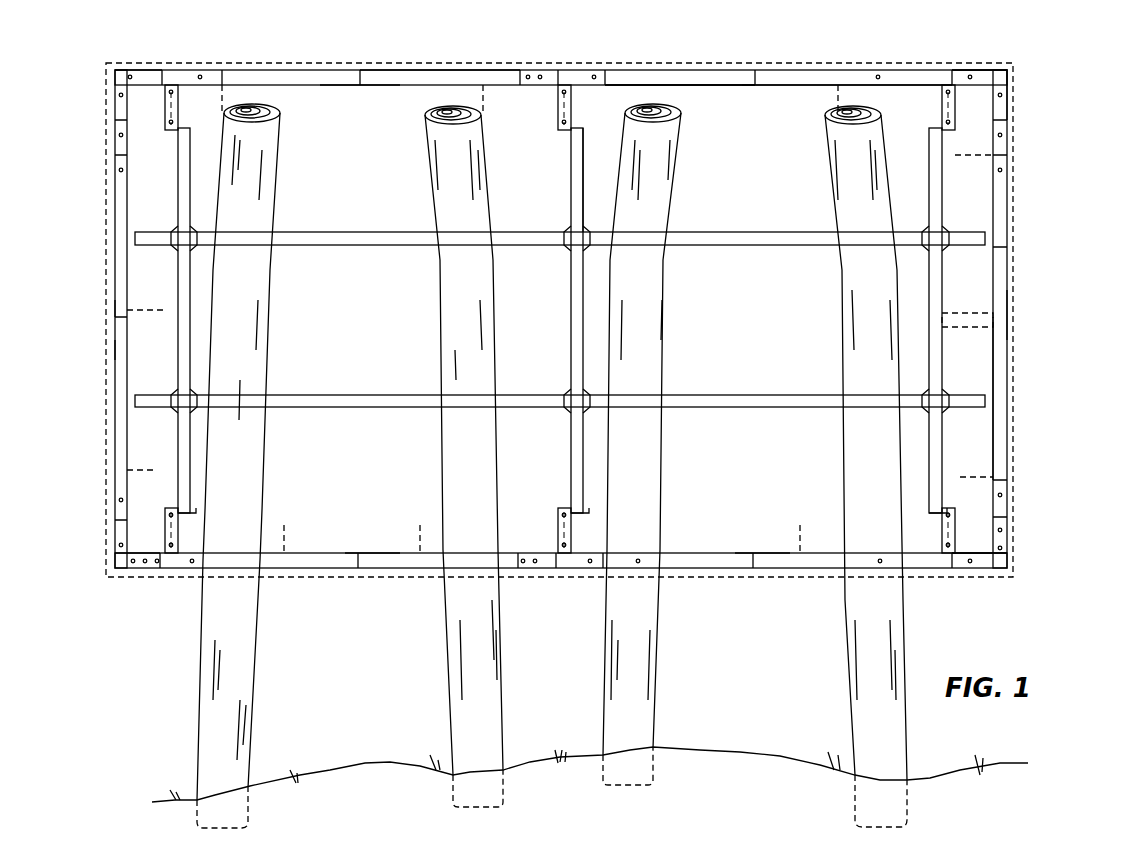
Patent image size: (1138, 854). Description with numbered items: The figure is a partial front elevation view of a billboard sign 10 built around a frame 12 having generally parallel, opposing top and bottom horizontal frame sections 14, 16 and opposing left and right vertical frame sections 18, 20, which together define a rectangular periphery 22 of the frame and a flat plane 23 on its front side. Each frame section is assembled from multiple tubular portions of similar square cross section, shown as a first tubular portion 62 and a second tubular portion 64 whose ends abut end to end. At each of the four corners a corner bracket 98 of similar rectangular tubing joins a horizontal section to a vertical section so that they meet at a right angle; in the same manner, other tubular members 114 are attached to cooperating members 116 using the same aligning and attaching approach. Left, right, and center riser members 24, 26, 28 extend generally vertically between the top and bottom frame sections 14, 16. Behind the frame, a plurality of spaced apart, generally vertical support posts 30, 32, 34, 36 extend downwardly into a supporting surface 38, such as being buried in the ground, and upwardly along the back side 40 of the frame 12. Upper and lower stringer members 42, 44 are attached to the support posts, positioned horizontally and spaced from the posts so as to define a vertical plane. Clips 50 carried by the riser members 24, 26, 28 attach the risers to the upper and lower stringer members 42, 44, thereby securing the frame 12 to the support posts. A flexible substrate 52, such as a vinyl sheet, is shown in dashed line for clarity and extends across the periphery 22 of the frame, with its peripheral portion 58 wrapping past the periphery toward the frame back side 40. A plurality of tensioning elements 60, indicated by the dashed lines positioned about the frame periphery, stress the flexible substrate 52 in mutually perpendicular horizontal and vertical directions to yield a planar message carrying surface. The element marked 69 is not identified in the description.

The billboard sign 10 is at (621, 315).
The frame 12 is at (306, 69).
The top horizontal frame section 14 is at (718, 86).
The bottom horizontal frame section 16 is at (670, 560).
The left vertical frame section 18 is at (124, 390).
The right vertical frame section 20 is at (997, 303).
The periphery 22 is at (880, 64).
The flat plane 23 is at (1015, 183).
The left riser member 24 is at (190, 360).
The right riser member 26 is at (942, 300).
The center riser member 28 is at (575, 345).
The support post 30 is at (260, 170).
The support post 32 is at (447, 184).
The support post 34 is at (668, 174).
The support post 36 is at (855, 170).
The supporting surface 38 is at (345, 775).
The back side 40 is at (679, 100).
The upper stringer member 42 is at (705, 232).
The lower stringer member 44 is at (718, 395).
The clips 50 is at (176, 232).
The flexible substrate 52 is at (1016, 430).
The peripheral portion 58 is at (440, 63).
The tensioning elements 60 is at (133, 186).
The first tubular portion 62 is at (742, 72).
The second tubular portion 64 is at (375, 86).
The board segment 69 is at (778, 86).
The corner bracket 98 is at (141, 68).
The tubular members 114 is at (176, 118).
The cooperating members 116 is at (169, 97).